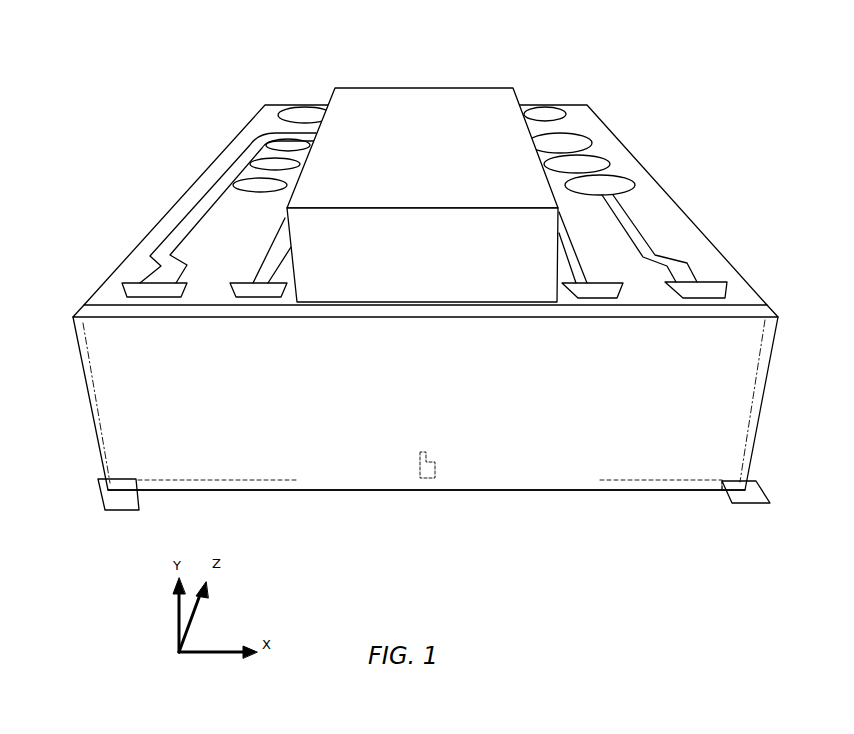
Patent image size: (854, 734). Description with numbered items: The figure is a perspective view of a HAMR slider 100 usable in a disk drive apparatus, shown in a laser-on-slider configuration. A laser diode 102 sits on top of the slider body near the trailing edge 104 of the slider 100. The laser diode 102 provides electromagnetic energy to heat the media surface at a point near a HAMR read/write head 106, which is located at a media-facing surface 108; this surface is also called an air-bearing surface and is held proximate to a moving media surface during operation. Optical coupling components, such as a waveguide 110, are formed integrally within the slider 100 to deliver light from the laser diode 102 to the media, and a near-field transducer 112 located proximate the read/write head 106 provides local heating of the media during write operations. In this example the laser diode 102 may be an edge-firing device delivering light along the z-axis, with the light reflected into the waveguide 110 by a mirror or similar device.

The HAMR slider 100 is at (411, 308).
The laser diode 102 is at (350, 88).
The trailing edge 104 is at (125, 511).
The HAMR read/write head 106 is at (430, 478).
The media-facing surface 108 is at (763, 503).
The waveguide 110 is at (427, 382).
The near-field transducer 112 is at (427, 482).